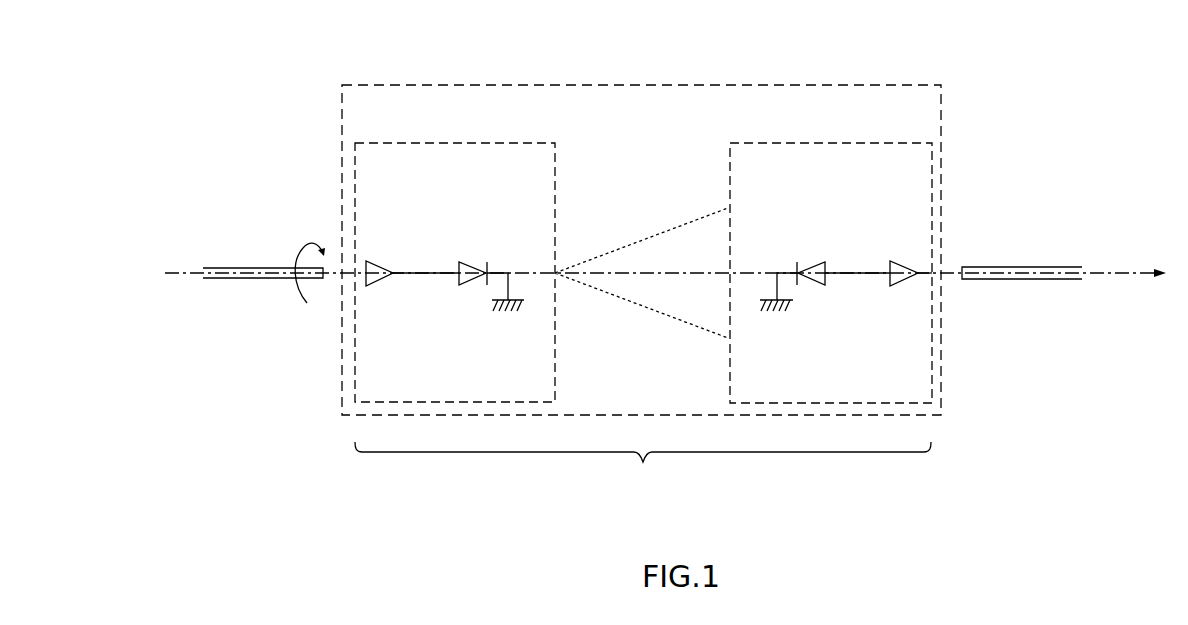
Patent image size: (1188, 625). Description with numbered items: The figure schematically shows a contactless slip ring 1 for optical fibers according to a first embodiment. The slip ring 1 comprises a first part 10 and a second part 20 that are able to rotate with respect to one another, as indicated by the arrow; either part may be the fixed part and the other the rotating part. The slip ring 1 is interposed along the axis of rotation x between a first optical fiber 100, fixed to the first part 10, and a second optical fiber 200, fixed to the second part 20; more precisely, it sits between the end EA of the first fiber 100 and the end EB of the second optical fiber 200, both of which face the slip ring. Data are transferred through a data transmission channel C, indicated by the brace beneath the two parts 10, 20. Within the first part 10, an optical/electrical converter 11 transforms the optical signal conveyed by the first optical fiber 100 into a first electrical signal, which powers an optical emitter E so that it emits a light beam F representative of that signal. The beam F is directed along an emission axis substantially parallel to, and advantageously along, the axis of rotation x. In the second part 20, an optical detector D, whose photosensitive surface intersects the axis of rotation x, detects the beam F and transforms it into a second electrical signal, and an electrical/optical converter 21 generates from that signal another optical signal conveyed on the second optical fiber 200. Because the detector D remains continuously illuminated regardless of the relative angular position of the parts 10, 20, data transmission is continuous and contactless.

The slip ring 1 is at (666, 85).
The first part 10 is at (388, 141).
The second part 20 is at (784, 141).
The optical/electrical converter 11 is at (368, 264).
The electrical/optical converter 21 is at (898, 262).
The first optical fiber 100 is at (262, 266).
The second optical fiber 200 is at (997, 266).
The optical emitter E is at (472, 263).
The optical detector D is at (821, 263).
The light beam F is at (651, 317).
The end of the first fiber EA is at (323, 280).
The end of the second optical fiber EB is at (961, 283).
The data transmission channel C is at (643, 470).
The axis of rotation x is at (666, 284).